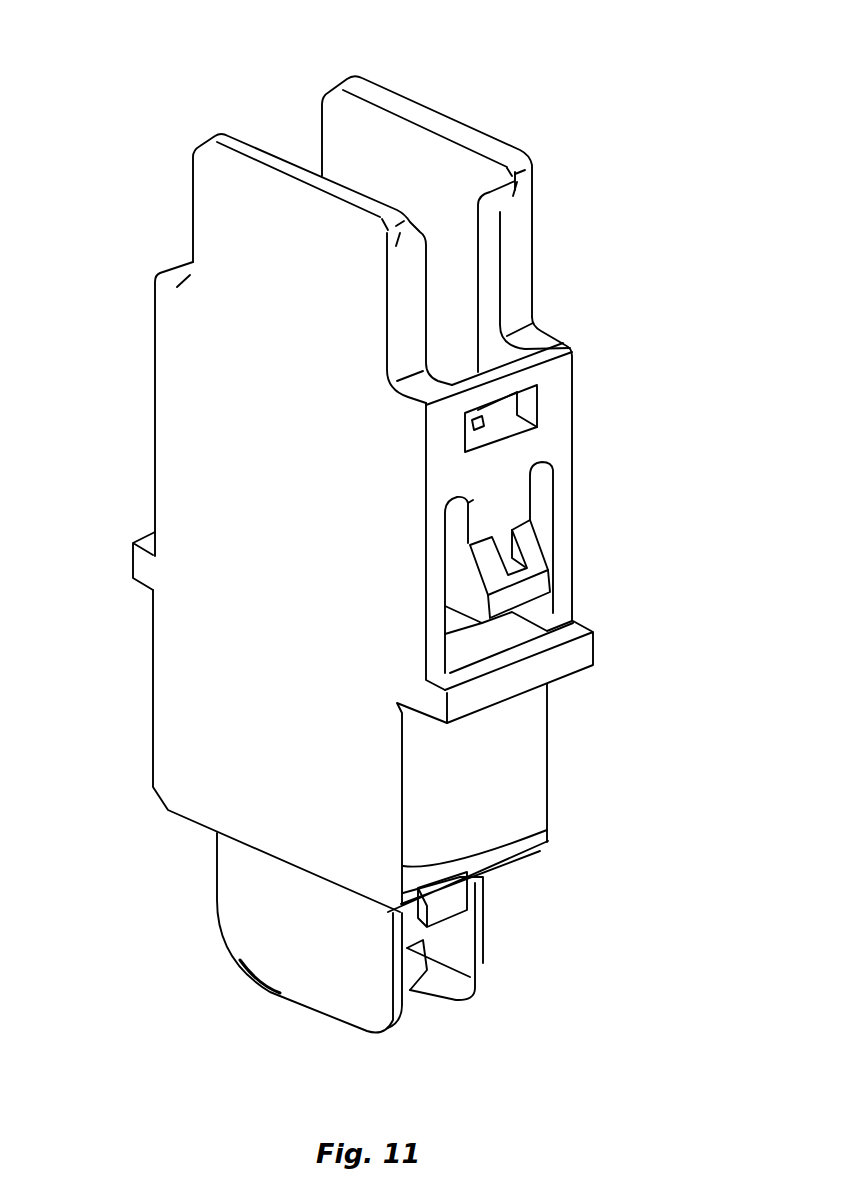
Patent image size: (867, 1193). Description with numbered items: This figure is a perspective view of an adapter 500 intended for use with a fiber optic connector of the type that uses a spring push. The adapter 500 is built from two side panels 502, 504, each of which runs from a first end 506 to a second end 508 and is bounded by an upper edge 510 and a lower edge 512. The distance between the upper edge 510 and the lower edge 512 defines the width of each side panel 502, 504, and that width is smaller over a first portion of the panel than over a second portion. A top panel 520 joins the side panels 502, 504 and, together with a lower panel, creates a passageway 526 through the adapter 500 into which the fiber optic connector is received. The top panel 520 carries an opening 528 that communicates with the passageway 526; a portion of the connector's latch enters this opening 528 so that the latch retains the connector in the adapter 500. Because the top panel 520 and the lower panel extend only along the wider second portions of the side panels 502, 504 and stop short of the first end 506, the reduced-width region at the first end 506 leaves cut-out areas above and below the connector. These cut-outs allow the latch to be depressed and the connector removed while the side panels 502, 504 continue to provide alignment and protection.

The adapter 500 is at (592, 748).
The side panel 502 is at (185, 723).
The side panel 504 is at (533, 252).
The first end 506 is at (229, 137).
The second end 508 is at (190, 820).
The upper edge 510 is at (534, 848).
The lower edge 512 is at (153, 455).
The top panel 520 is at (538, 791).
The passageway 526 is at (379, 138).
The opening 528 is at (537, 406).